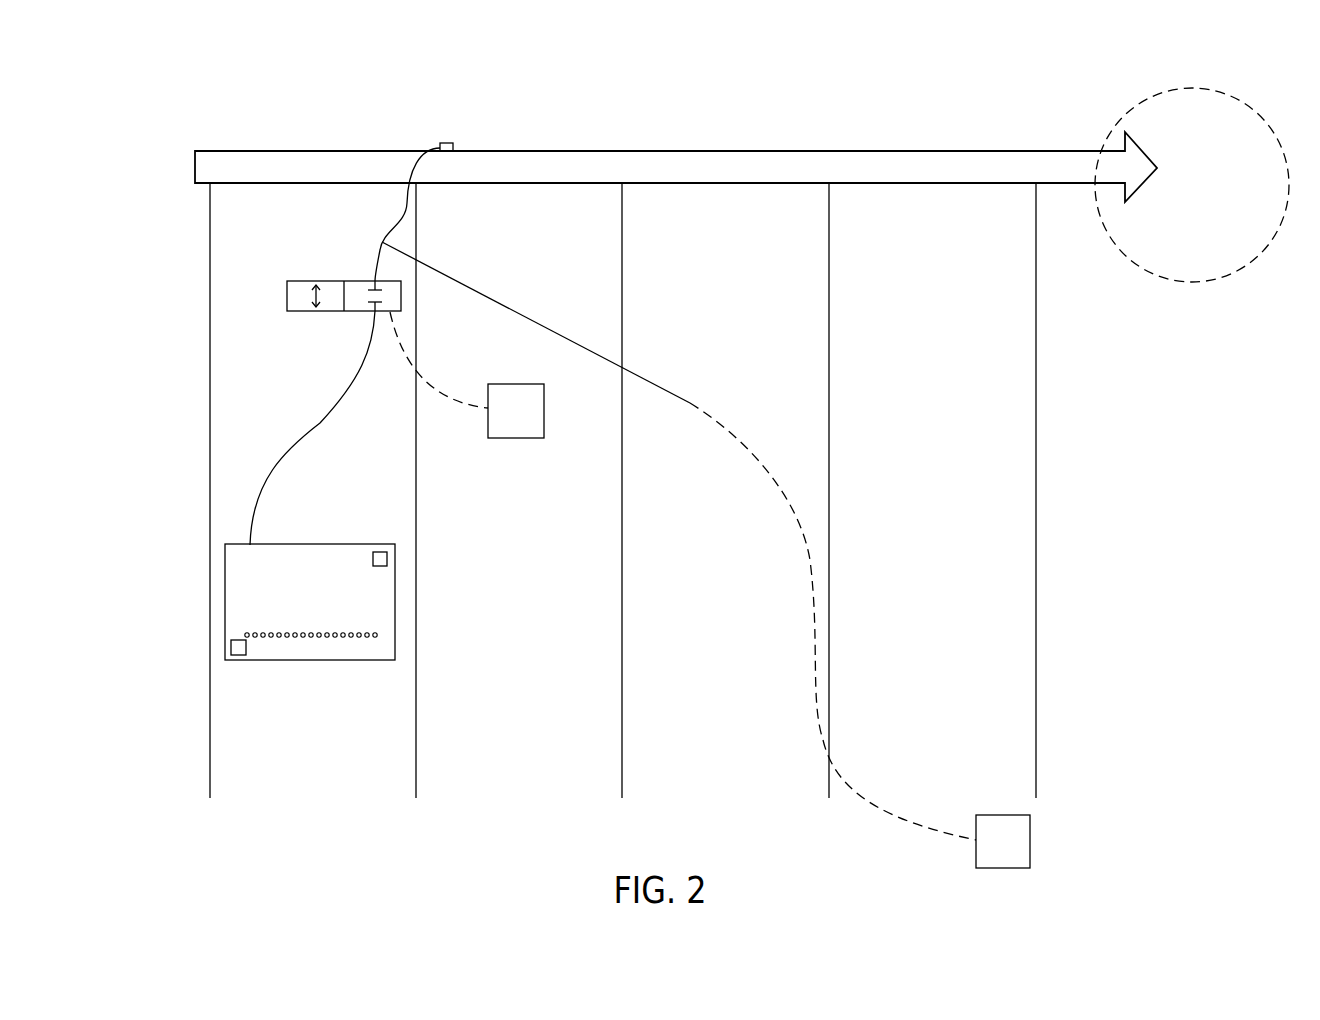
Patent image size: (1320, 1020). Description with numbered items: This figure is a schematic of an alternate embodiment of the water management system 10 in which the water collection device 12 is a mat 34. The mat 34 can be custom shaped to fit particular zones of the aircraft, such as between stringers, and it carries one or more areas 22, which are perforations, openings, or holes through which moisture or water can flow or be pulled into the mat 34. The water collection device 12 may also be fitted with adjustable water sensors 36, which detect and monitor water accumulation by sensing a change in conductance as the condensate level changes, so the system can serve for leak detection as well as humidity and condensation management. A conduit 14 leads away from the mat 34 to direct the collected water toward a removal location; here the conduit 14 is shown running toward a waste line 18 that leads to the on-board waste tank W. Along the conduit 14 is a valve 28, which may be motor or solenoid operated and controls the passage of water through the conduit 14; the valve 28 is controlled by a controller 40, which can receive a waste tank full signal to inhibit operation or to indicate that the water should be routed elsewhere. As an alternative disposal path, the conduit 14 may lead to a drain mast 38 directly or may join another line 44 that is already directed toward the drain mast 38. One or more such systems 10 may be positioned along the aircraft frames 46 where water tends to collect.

The water management system 10 is at (642, 82).
The water collection device 12 is at (271, 602).
The conduit 14 is at (320, 422).
The waste line 18 is at (821, 158).
The areas for receiving moisture 22 is at (262, 640).
The valve 28 is at (335, 281).
The mat 34 is at (306, 592).
The water sensor 36 is at (380, 552).
The drain mast 38 is at (1003, 841).
The controller 40 is at (467, 375).
The line 44 is at (802, 530).
The frame 46 is at (1036, 467).
The waste tank W is at (1192, 185).